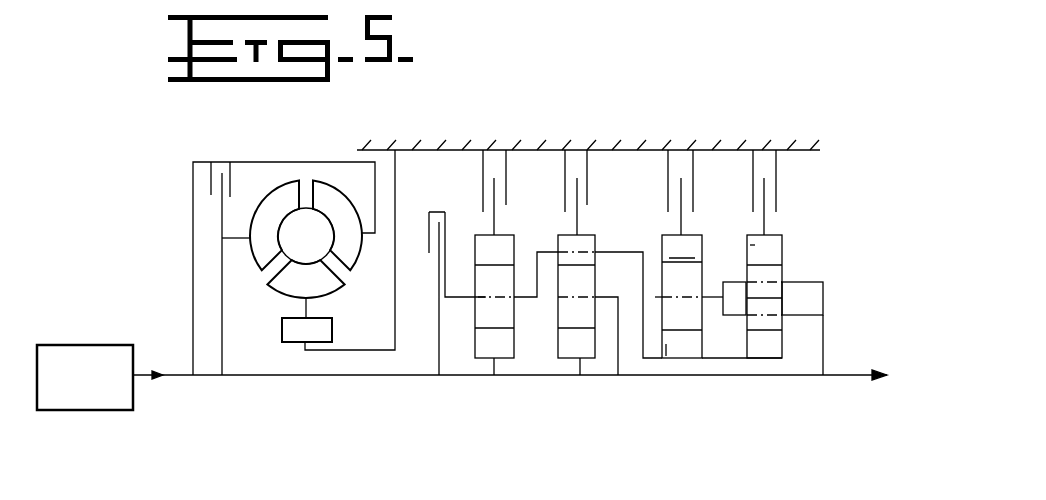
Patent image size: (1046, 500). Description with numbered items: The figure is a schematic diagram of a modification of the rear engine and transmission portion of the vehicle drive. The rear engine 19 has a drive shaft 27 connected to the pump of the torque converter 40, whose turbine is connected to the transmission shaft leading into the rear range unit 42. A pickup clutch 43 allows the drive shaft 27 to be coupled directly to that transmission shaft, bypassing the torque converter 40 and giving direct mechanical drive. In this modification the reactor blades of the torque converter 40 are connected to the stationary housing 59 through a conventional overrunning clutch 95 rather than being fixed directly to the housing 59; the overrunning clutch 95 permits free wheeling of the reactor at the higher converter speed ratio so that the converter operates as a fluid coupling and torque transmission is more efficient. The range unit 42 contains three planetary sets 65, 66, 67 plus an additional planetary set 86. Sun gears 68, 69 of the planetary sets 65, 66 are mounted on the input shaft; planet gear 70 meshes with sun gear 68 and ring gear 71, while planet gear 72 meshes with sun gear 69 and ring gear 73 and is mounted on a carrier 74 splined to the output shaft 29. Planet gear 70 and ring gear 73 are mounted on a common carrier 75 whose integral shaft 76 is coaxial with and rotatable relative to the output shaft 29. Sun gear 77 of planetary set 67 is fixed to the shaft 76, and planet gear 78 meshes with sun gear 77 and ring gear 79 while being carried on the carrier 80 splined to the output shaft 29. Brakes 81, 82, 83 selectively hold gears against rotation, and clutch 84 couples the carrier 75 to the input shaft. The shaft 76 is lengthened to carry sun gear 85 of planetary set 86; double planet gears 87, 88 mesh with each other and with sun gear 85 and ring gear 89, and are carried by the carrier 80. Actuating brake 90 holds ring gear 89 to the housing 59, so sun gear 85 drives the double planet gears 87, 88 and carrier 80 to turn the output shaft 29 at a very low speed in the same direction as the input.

The rear engine 19 is at (95, 345).
The drive shaft 27 is at (170, 375).
The output shaft 29 is at (847, 375).
The torque converter 40 is at (270, 188).
The range unit 42 is at (618, 127).
The pickup clutch 43 is at (208, 177).
The housing 59 is at (402, 150).
The planetary set 65 is at (503, 287).
The planetary set 66 is at (592, 310).
The planetary set 67 is at (718, 320).
The sun gear 68 is at (476, 338).
The sun gear 69 is at (582, 360).
The planet gear 70 is at (487, 300).
The ring gear 71 is at (482, 248).
The planet gear 72 is at (568, 315).
The ring gear 73 is at (588, 253).
The carrier 74 is at (617, 352).
The carrier 75 is at (518, 298).
The shaft 76 is at (717, 360).
The sun gear 77 is at (675, 348).
The planet gear 78 is at (687, 314).
The ring gear 79 is at (682, 249).
The carrier 80 is at (724, 293).
The brake 81 is at (695, 170).
The brake 82 is at (592, 172).
The brake 83 is at (507, 170).
The clutch 84 is at (440, 212).
The sun gear 85 is at (782, 345).
The planetary set 86 is at (811, 281).
The double planet gear 87 is at (782, 321).
The double planet gear 88 is at (782, 265).
The ring gear 89 is at (782, 245).
The brake 90 is at (778, 178).
The overrunning clutch 95 is at (332, 323).